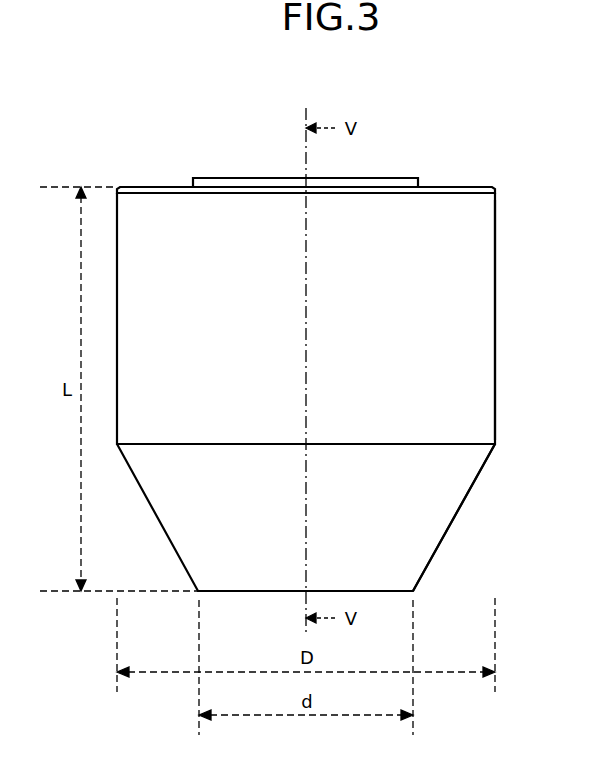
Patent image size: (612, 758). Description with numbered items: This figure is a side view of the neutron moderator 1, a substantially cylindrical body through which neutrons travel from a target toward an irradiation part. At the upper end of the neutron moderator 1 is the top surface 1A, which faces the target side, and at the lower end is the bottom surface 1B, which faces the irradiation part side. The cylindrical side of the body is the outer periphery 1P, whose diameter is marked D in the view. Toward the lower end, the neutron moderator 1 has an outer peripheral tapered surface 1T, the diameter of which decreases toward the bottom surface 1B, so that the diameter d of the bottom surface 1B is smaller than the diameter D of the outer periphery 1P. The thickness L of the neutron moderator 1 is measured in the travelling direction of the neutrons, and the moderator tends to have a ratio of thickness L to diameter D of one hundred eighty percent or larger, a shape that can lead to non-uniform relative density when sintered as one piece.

The neutron moderator 1 is at (340, 373).
The top surface 1A is at (152, 187).
The bottom surface 1B is at (242, 592).
The outer periphery 1P is at (495, 329).
The outer peripheral tapered surface 1T is at (448, 531).